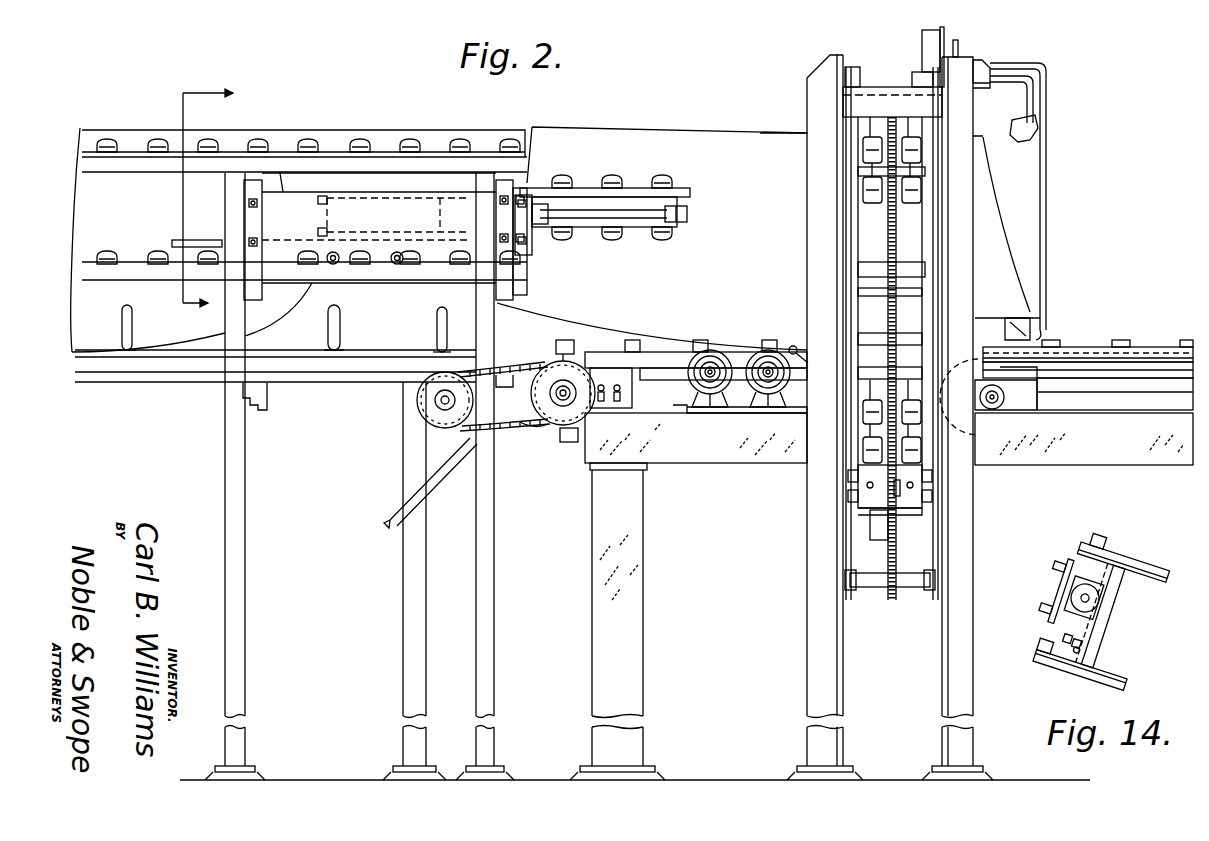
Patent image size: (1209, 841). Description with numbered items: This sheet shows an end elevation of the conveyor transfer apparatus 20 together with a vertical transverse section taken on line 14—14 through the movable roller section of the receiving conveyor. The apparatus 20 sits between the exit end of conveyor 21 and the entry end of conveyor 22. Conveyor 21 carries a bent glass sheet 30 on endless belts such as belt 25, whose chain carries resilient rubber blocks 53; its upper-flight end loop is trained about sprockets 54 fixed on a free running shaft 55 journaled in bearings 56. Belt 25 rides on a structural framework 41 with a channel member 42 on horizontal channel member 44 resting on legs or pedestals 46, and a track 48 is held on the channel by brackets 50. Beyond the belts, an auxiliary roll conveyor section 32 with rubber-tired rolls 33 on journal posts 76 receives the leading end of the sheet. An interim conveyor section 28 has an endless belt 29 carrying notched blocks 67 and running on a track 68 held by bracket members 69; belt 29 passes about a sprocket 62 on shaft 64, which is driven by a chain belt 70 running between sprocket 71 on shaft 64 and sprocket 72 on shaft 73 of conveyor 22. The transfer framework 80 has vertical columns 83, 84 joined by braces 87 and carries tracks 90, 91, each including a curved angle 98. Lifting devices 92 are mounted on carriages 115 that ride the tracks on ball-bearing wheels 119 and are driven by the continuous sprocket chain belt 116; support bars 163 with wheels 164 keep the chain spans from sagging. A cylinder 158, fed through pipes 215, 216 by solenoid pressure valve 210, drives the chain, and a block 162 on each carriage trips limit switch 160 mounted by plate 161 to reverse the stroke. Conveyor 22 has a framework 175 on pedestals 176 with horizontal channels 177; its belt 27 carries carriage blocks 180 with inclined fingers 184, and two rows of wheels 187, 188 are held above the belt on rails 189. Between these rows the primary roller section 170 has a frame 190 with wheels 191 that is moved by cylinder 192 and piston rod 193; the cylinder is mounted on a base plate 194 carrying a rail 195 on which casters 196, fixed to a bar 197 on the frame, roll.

In FIG. 2, the section line 14 is at (188, 88).
In FIG. 2, the conveyor transfer apparatus 20 is at (808, 66).
In FIG. 2, the conveyor 21 is at (1152, 307).
In FIG. 2, the conveyor 22 is at (345, 132).
In FIG. 14, the conveyor 22 is at (1138, 563).
In FIG. 2, the endless conveyor belt 25 is at (1136, 352).
In FIG. 2, the conveyor belt 27 is at (393, 511).
In FIG. 2, the interim conveyor section 28 is at (616, 350).
In FIG. 2, the endless belt 29 is at (545, 364).
In FIG. 2, the bent glass sheet 30 is at (262, 129).
In FIG. 2, the auxiliary roll conveyor section 32 is at (738, 385).
In FIG. 2, the rolls 33 is at (777, 380).
In FIG. 2, the structural framework 41 is at (637, 537).
In FIG. 2, the channel member 42 is at (1160, 406).
In FIG. 2, the horizontally disposed channel member 44 is at (720, 447).
In FIG. 2, the legs or pedestals 46 is at (621, 563).
In FIG. 2, the track 48 is at (1081, 371).
In FIG. 2, the brackets 50 is at (1013, 390).
In FIG. 2, the blocks 53 is at (1101, 352).
In FIG. 2, the sprockets 54 is at (983, 413).
In FIG. 2, the free running shaft 55 is at (994, 403).
In FIG. 2, the bearings 56 is at (1006, 403).
In FIG. 2, the sprocket 62 is at (539, 400).
In FIG. 2, the shaft 64 is at (549, 393).
In FIG. 2, the notched blocks 67 is at (567, 339).
In FIG. 2, the track 68 is at (660, 362).
In FIG. 2, the bracket members 69 is at (611, 396).
In FIG. 2, the chain belt 70 is at (525, 427).
In FIG. 2, the sprocket 71 is at (560, 428).
In FIG. 2, the sprocket 72 is at (432, 414).
In FIG. 2, the shaft 73 is at (432, 400).
In FIG. 2, the journal posts 76 is at (720, 393).
In FIG. 2, the framework 80 is at (823, 96).
In FIG. 2, the column 83 is at (958, 213).
In FIG. 2, the column 84 is at (820, 118).
In FIG. 2, the braces 87 is at (890, 100).
In FIG. 2, the track 90 is at (946, 275).
In FIG. 2, the track 91 is at (843, 247).
In FIG. 2, the lifting devices 92 is at (862, 150).
In FIG. 2, the curved angle 98 is at (850, 296).
In FIG. 2, the carriage 115 is at (880, 499).
In FIG. 2, the continuous sprocket chain belt 116 is at (888, 217).
In FIG. 2, the ball-bearing wheels 119 is at (855, 500).
In FIG. 2, the cylinder 158 is at (997, 158).
In FIG. 2, the limit switch 160 is at (926, 45).
In FIG. 2, the plate 161 is at (946, 27).
In FIG. 2, the block 162 is at (901, 511).
In FIG. 2, the support bars 163 is at (858, 171).
In FIG. 2, the ball-bearing wheels 164 is at (856, 592).
In FIG. 2, the primary roller section 170 is at (643, 181).
In FIG. 14, the primary roller section 170 is at (1062, 572).
In FIG. 2, the framework 175 is at (418, 452).
In FIG. 14, the framework 175 is at (1120, 683).
In FIG. 2, the pedestals 176 is at (233, 470).
In FIG. 2, the channels 177 is at (284, 371).
In FIG. 2, the carriage blocks 180 is at (438, 334).
In FIG. 2, the plug or finger 184 is at (340, 322).
In FIG. 2, the rollers or wheels 187 is at (157, 138).
In FIG. 14, the rollers or wheels 187 is at (1078, 540).
In FIG. 2, the rollers or wheels 188 is at (157, 255).
In FIG. 14, the rollers or wheels 188 is at (1045, 646).
In FIG. 2, the rails 189 is at (142, 160).
In FIG. 14, the rails 189 is at (1090, 557).
In FIG. 2, the frame 190 is at (598, 207).
In FIG. 14, the frame 190 is at (1072, 594).
In FIG. 2, the wheels 191 is at (611, 180).
In FIG. 14, the wheels 191 is at (1060, 567).
In FIG. 2, the cylinder 192 is at (440, 198).
In FIG. 14, the cylinder 192 is at (1102, 582).
In FIG. 2, the piston rod 193 is at (640, 220).
In FIG. 2, the base plate 194 is at (430, 238).
In FIG. 14, the base plate 194 is at (1110, 616).
In FIG. 2, the rail or track 195 is at (203, 240).
In FIG. 14, the rail or track 195 is at (1080, 645).
In FIG. 2, the casters 196 is at (337, 265).
In FIG. 14, the casters 196 is at (1077, 650).
In FIG. 14, the bar 197 is at (1067, 638).
In FIG. 2, the solenoid pressure valve 210 is at (981, 70).
In FIG. 2, the pipe 215 is at (1031, 93).
In FIG. 2, the pipe 216 is at (1047, 72).